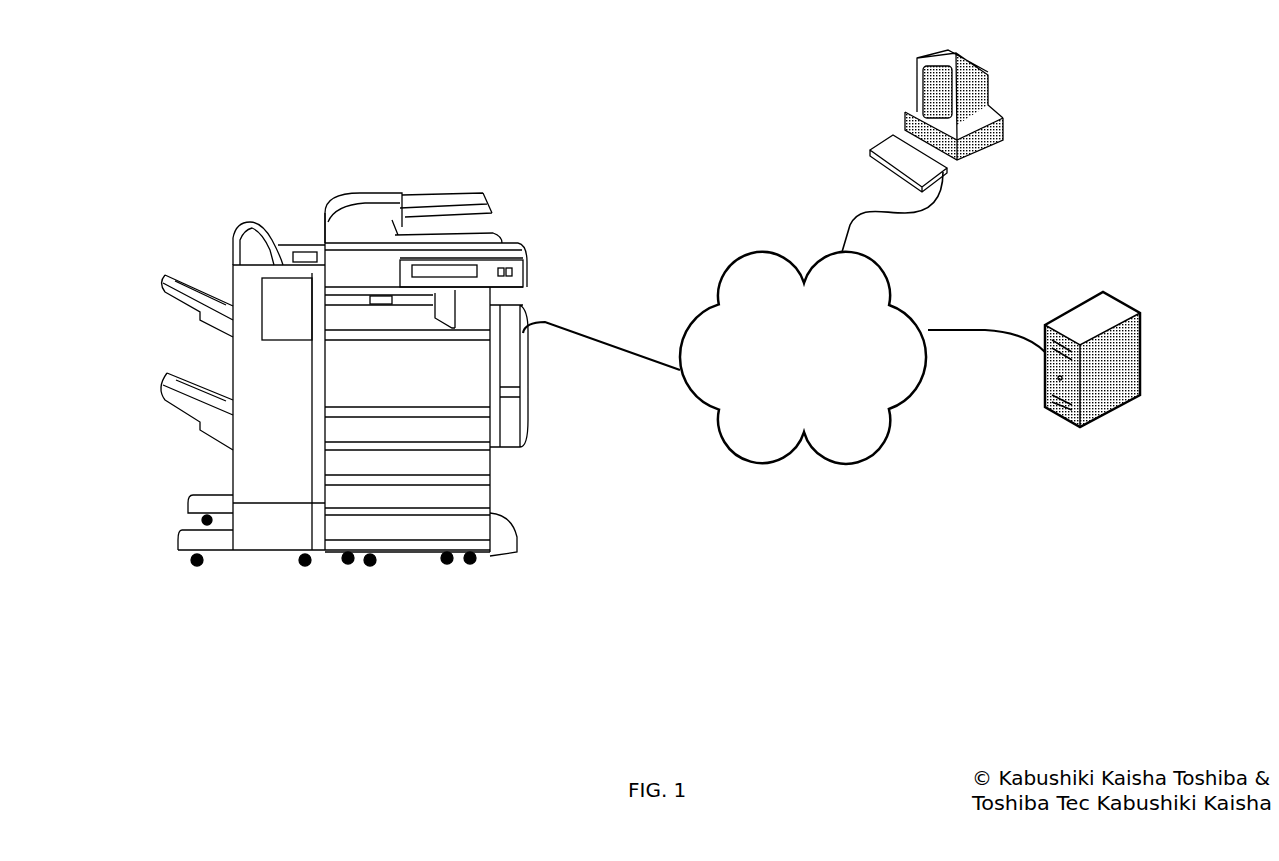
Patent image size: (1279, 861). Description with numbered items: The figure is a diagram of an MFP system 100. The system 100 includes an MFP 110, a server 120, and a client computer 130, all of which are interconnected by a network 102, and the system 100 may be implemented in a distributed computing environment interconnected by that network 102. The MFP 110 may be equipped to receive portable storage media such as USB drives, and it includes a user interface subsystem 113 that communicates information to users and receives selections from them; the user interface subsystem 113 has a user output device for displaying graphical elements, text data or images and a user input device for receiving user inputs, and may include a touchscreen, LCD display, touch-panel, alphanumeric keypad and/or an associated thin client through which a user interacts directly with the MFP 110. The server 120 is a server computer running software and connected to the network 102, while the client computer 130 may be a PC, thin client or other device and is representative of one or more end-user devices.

The MFP system 100 is at (734, 131).
The network 102 is at (803, 358).
The MFP 110 is at (353, 329).
The user interface subsystem 113 is at (472, 272).
The server 120 is at (1140, 338).
The client computer 130 is at (1003, 121).